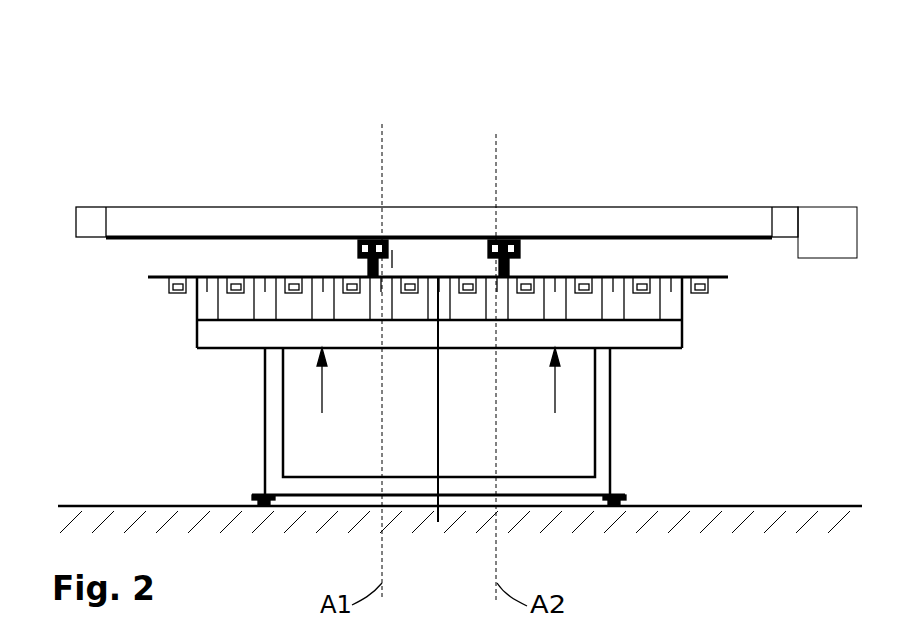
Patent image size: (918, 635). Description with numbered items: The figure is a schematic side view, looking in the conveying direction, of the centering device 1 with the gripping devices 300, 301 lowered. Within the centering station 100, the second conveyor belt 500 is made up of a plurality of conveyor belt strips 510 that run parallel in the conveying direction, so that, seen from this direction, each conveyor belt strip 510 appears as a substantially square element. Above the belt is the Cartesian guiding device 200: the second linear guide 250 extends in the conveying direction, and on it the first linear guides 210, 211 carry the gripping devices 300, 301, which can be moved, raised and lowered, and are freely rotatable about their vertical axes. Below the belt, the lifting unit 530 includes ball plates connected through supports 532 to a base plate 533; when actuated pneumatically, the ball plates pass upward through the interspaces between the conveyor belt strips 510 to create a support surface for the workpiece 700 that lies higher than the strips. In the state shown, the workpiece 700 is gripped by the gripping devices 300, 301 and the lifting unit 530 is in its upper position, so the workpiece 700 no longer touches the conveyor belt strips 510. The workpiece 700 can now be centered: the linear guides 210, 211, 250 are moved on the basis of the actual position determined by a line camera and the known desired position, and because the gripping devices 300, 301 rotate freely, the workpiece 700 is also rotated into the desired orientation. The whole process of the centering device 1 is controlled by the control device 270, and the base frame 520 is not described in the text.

The centering device 1 is at (134, 84).
The centering station 100 is at (367, 100).
The Cartesian guiding device 200 is at (146, 200).
The first linear guide 210 is at (360, 236).
The first linear guide 211 is at (520, 236).
The second linear guide 250 is at (692, 222).
The control device 270 is at (850, 249).
The gripping device 300 is at (373, 226).
The gripping device 301 is at (496, 226).
The second conveyor belt 500 is at (143, 296).
The conveyor belt strips 510 is at (700, 294).
The base frame 520 is at (482, 482).
The lifting unit 530 is at (700, 356).
The supports 532 is at (381, 292).
The base plate 533 is at (623, 333).
The workpiece 700 is at (470, 276).